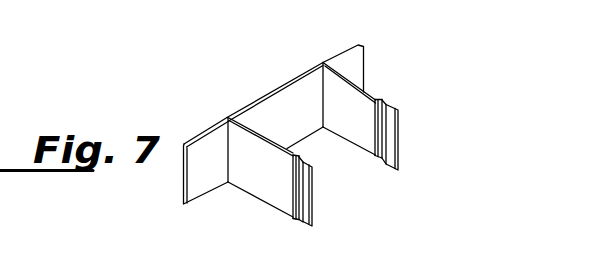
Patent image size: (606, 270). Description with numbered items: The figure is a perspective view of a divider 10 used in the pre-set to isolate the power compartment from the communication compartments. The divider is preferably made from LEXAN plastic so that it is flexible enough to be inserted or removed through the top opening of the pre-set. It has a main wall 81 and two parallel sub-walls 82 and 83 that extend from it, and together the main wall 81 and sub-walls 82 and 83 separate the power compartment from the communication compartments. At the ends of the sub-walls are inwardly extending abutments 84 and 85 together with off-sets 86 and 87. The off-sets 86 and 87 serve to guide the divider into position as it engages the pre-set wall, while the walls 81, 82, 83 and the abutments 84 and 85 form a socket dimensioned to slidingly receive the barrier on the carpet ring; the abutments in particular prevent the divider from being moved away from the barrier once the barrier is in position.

The shield assembly 10 is at (454, 81).
The main wall 81 is at (275, 107).
The sub-wall 82 is at (262, 183).
The sub-wall 83 is at (361, 110).
The abutment 84 is at (298, 153).
The abutment 85 is at (376, 157).
The off-set 86 is at (300, 220).
The off-set 87 is at (392, 170).